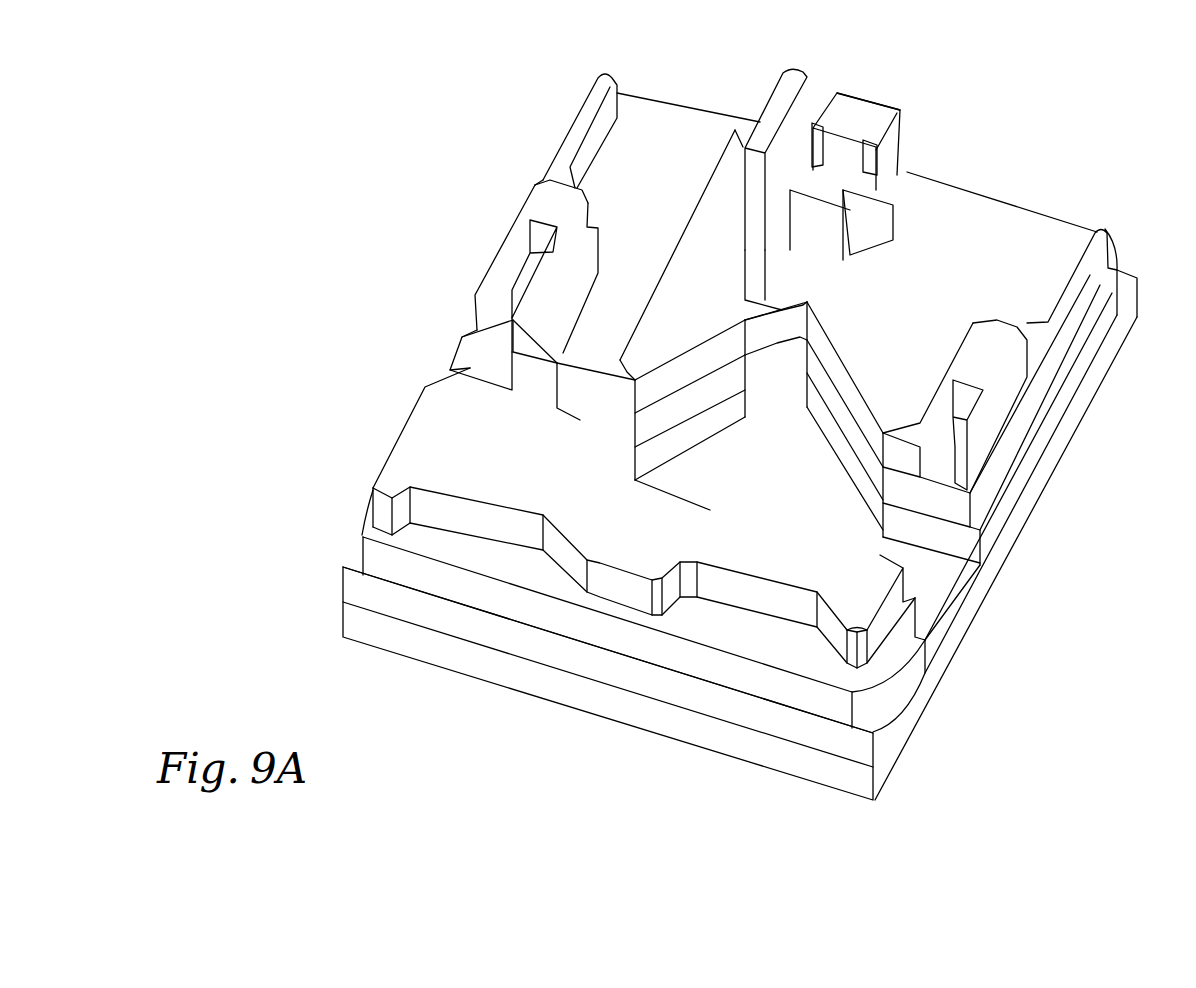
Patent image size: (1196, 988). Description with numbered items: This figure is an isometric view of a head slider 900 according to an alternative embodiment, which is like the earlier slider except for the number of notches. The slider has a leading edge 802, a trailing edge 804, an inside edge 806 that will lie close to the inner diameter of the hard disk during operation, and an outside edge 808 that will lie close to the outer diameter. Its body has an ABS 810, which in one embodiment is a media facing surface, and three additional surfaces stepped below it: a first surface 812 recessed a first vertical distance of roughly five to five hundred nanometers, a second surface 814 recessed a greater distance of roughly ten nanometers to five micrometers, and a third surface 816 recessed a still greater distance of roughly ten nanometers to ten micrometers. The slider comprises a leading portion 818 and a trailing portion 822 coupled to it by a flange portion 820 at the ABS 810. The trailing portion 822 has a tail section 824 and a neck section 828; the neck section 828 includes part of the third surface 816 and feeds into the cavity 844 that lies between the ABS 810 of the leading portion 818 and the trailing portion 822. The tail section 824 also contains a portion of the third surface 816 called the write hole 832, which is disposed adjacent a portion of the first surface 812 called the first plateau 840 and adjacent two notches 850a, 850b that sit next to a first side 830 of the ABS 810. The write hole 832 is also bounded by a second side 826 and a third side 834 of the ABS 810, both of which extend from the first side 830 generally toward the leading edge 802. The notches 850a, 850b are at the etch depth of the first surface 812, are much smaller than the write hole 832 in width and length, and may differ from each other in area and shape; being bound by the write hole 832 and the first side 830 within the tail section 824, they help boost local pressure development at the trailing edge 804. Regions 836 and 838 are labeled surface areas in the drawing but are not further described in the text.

The head slider 900 is at (443, 142).
The leading edge 802 is at (482, 718).
The trailing edge 804 is at (1003, 173).
The inside edge 806 is at (1075, 555).
The outside edge 808 is at (445, 348).
The ABS 810 is at (537, 195).
The first surface 812 is at (600, 87).
The second surface 814 is at (646, 98).
The third surface 816 is at (829, 482).
The leading portion 818 is at (898, 780).
The flange portion 820 is at (960, 666).
The trailing portion 822 is at (1166, 282).
The tail section 824 is at (722, 134).
The second side 826 is at (782, 135).
The neck section 828 is at (643, 282).
The first side 830 is at (882, 107).
The write hole 832 is at (818, 193).
The third side 834 is at (885, 175).
The right surface region 836 is at (936, 332).
The left surface region 838 is at (668, 218).
The first plateau 840 is at (870, 220).
The cavity 844 is at (786, 376).
The notch 850a is at (880, 127).
The notch 850b is at (822, 110).